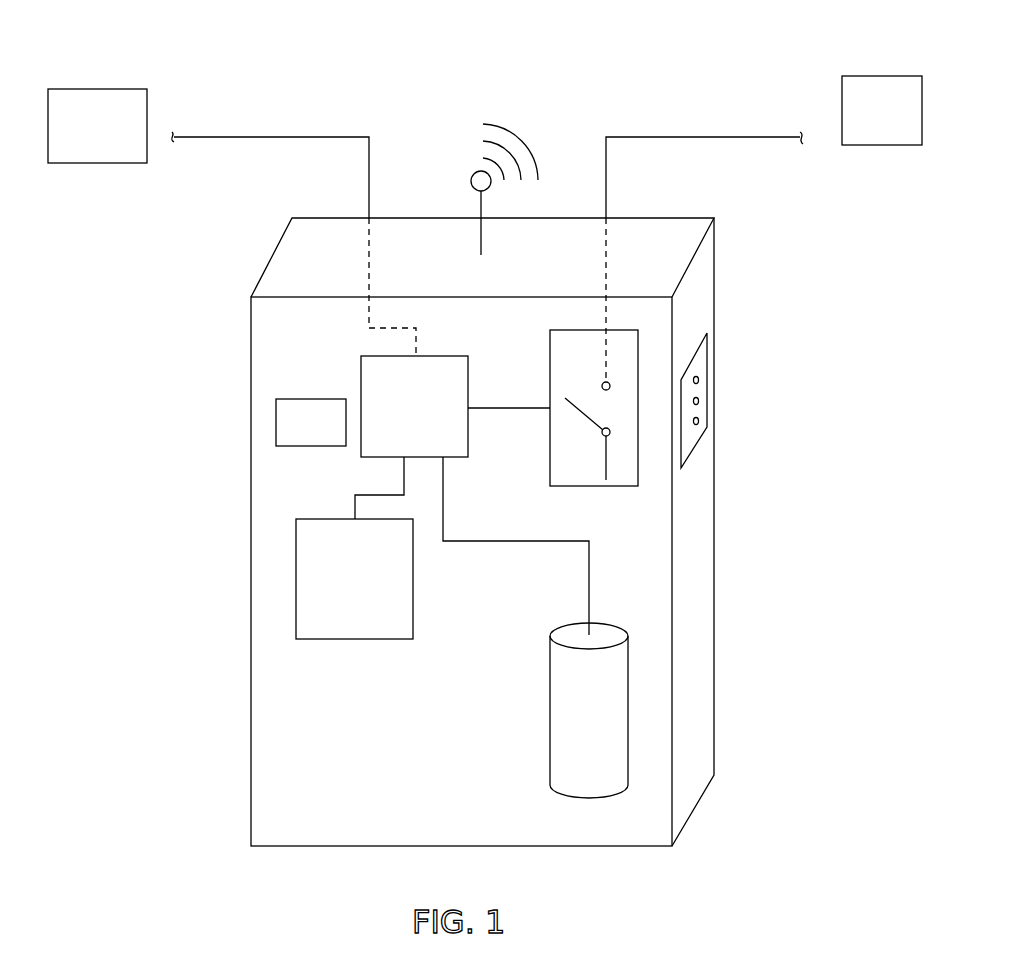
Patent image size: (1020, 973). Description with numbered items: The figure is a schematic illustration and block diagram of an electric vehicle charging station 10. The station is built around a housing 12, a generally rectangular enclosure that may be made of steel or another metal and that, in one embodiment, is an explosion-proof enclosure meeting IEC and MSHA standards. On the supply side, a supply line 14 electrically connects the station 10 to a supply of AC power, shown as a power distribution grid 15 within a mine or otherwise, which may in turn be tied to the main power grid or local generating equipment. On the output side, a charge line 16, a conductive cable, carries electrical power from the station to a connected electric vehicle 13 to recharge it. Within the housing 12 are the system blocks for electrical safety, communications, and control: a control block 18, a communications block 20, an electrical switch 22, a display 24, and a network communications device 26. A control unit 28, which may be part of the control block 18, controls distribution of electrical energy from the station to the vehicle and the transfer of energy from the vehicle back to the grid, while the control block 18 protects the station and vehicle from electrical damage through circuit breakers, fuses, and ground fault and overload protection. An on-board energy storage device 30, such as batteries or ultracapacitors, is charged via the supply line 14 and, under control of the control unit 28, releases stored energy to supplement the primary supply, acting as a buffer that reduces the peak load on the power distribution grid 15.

The electric vehicle charging station 10 is at (818, 207).
The housing 12 is at (251, 753).
The electric vehicle 13 is at (883, 76).
The supply line 14 is at (271, 137).
The power distribution grid 15 is at (101, 89).
The charge line 16 is at (712, 137).
The control block 18 is at (361, 363).
The communications block 20 is at (296, 578).
The electrical switch 22 is at (623, 488).
The display 24 is at (700, 390).
The network communications device 26 is at (471, 181).
The control unit 28 is at (276, 418).
The on-board energy storage device 30 is at (550, 730).